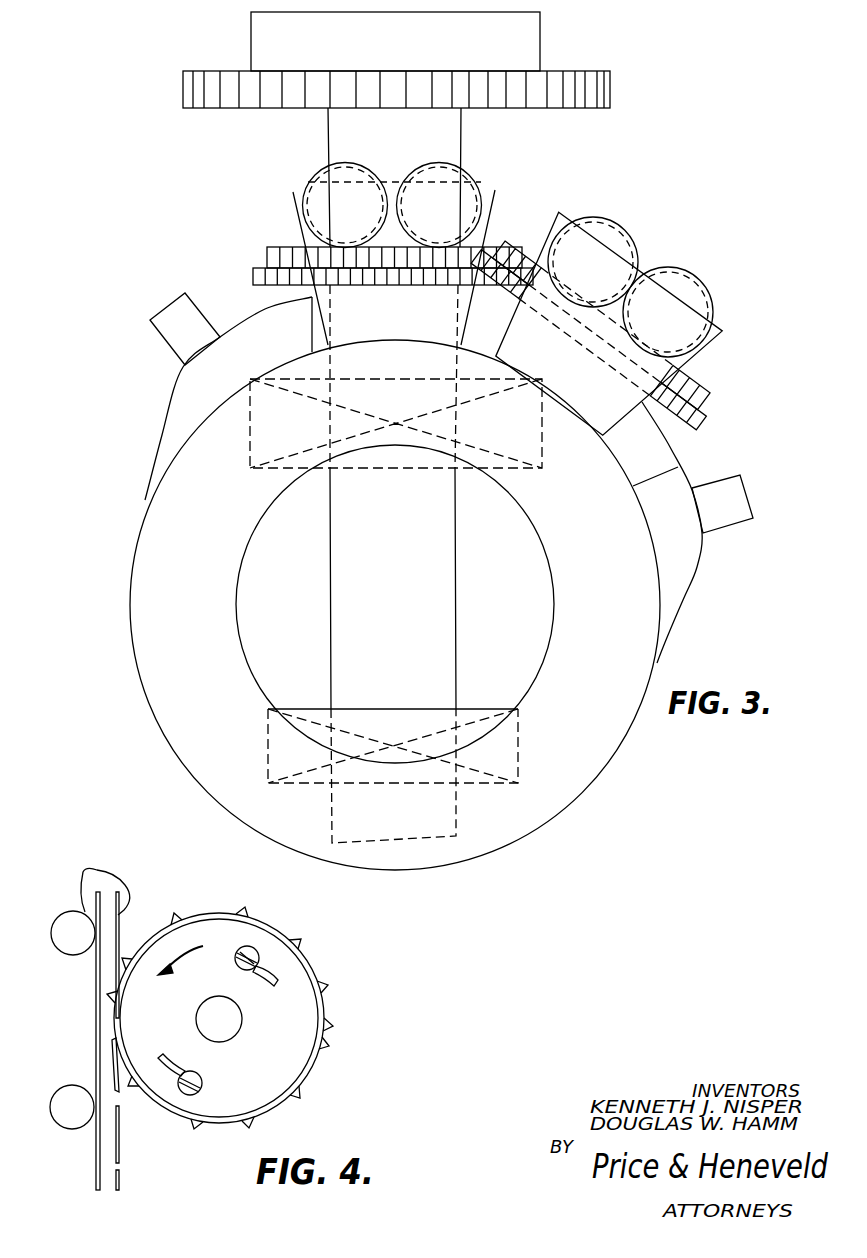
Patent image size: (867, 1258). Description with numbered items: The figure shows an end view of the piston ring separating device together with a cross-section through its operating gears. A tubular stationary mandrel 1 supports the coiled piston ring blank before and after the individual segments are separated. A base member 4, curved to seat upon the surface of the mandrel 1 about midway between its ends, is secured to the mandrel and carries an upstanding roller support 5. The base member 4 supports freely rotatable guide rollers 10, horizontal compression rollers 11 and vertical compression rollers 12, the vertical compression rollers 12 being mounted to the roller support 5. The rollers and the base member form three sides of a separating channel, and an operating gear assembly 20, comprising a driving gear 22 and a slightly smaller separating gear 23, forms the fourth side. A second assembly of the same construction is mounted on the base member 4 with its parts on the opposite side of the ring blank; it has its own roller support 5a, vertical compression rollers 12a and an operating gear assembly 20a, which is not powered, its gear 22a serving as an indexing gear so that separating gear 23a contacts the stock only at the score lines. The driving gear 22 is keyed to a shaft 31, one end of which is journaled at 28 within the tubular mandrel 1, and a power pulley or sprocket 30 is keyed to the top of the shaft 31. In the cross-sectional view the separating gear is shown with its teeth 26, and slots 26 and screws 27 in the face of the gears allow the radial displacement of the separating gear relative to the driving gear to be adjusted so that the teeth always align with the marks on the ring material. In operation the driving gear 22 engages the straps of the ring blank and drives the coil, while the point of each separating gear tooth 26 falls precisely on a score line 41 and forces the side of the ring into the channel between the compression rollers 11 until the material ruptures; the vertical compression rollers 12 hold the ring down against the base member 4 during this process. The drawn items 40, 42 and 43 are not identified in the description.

In FIG. 3, the tubular stationary mandrel 1 is at (587, 781).
In FIG. 3, the base member 4 is at (683, 598).
In FIG. 3, the roller support 5 is at (297, 206).
In FIG. 3, the roller support of second assembly 5a is at (603, 433).
In FIG. 3, the guide rollers 10 is at (163, 338).
In FIG. 4, the horizontal compression rollers 11 is at (58, 939).
In FIG. 3, the vertical compression rollers 12 is at (314, 177).
In FIG. 3, the vertical compression rollers of second assembly 12a is at (640, 193).
In FIG. 3, the operating gear assembly 20 is at (462, 150).
In FIG. 3, the second operating gear assembly 20a is at (705, 414).
In FIG. 3, the driving gear 22 is at (253, 278).
In FIG. 3, the indexing gear 22a is at (693, 432).
In FIG. 3, the separating gear 23 is at (267, 255).
In FIG. 4, the separating gear 23 is at (284, 953).
In FIG. 3, the separating gear of second assembly 23a is at (704, 397).
In FIG. 4, the separating gear teeth 26 is at (162, 922).
In FIG. 4, the screws 27 is at (250, 948).
In FIG. 3, the journal 28 is at (462, 468).
In FIG. 3, the power pulley or sprocket 30 is at (541, 40).
In FIG. 3, the shaft 31 is at (327, 147).
In FIG. 4, the strip 40 is at (120, 1178).
In FIG. 4, the score line 41 is at (88, 868).
In FIG. 4, the flap 42 is at (115, 1033).
In FIG. 4, the flap 43 is at (120, 1163).